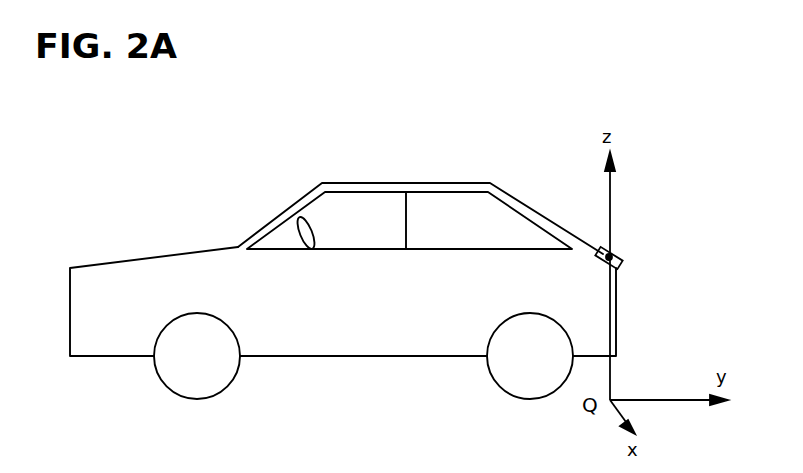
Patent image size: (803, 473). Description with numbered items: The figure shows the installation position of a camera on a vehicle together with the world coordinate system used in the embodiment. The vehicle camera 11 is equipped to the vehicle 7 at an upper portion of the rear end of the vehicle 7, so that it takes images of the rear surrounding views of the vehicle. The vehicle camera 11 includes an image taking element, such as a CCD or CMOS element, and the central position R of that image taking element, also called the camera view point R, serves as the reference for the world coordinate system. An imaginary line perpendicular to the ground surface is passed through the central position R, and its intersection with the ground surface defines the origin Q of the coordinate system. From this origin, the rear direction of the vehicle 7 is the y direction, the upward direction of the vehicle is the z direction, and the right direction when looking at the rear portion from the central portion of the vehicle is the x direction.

The vehicle 7 is at (511, 133).
The vehicle camera 11 is at (623, 259).
The central position (camera view point) R is at (598, 248).